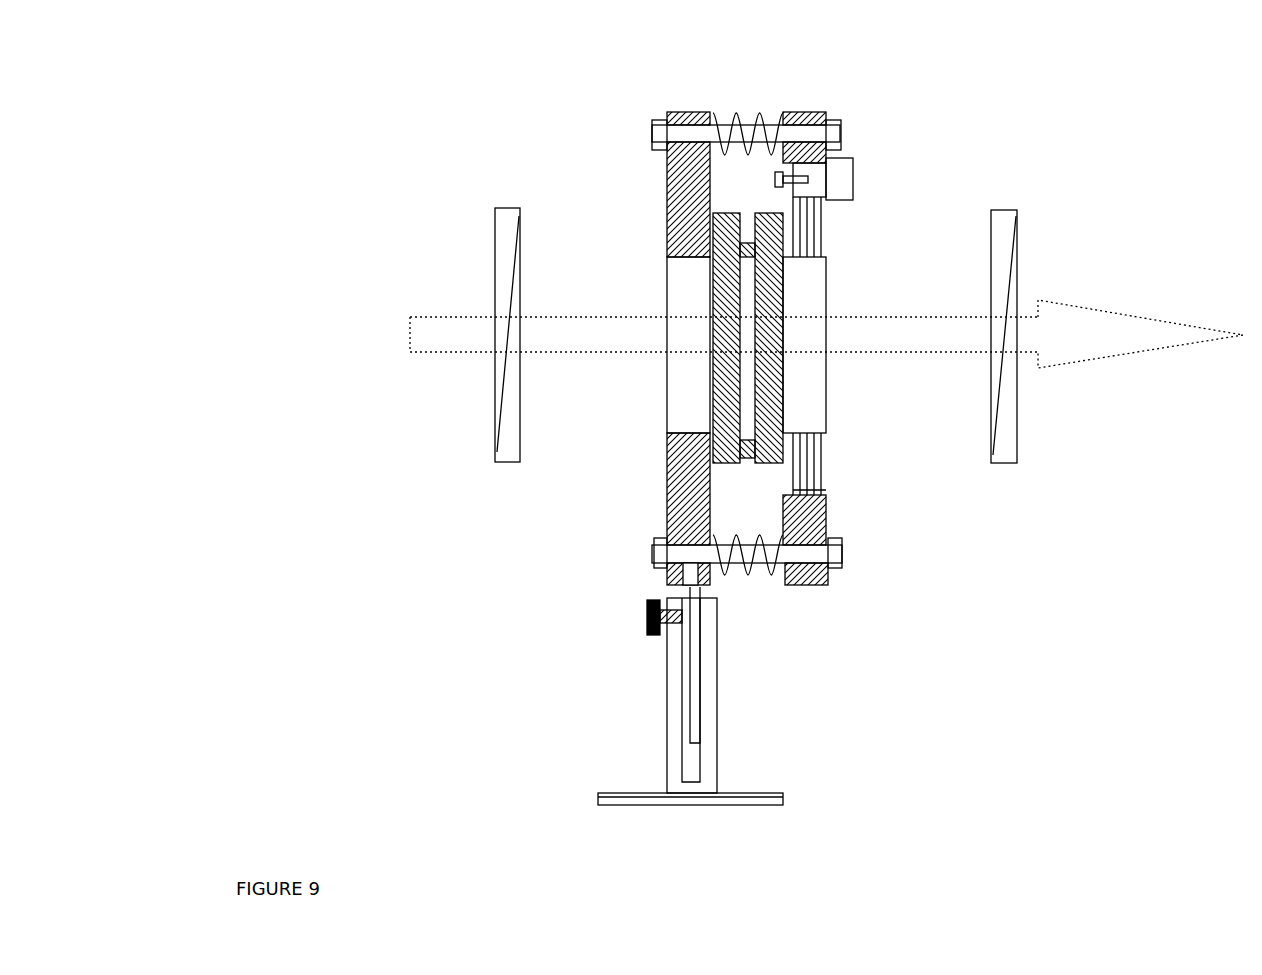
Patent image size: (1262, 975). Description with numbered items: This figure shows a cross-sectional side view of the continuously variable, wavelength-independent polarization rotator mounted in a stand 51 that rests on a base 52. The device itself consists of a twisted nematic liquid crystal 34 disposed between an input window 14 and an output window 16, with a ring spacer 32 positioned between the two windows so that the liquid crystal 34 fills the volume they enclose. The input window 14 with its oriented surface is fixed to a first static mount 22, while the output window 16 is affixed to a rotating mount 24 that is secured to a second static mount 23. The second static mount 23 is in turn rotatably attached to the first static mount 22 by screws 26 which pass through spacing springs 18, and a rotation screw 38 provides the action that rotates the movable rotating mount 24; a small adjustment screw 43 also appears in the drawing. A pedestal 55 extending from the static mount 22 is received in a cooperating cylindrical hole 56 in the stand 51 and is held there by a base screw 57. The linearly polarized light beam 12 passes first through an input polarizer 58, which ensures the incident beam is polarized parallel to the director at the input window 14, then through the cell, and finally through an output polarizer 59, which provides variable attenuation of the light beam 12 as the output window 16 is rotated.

The light beam 12 is at (441, 312).
The input window 14 is at (720, 236).
The output window 16 is at (826, 247).
The spacing spring 18 is at (735, 117).
The first static mount 22 is at (667, 490).
The second static mount 23 is at (832, 513).
The rotating mount 24 is at (826, 222).
The screw 26 is at (845, 132).
The ring spacer 32 is at (755, 440).
The twisted nematic liquid crystal 34 is at (748, 293).
The rotation screw 38 is at (858, 166).
The adjustment screw 43 is at (775, 178).
The stand 51 is at (720, 733).
The base 52 is at (793, 797).
The pedestal 55 is at (703, 650).
The cylindrical hole 56 is at (690, 753).
The base screw 57 is at (637, 622).
The input polarizer 58 is at (507, 466).
The output polarizer 59 is at (1028, 234).